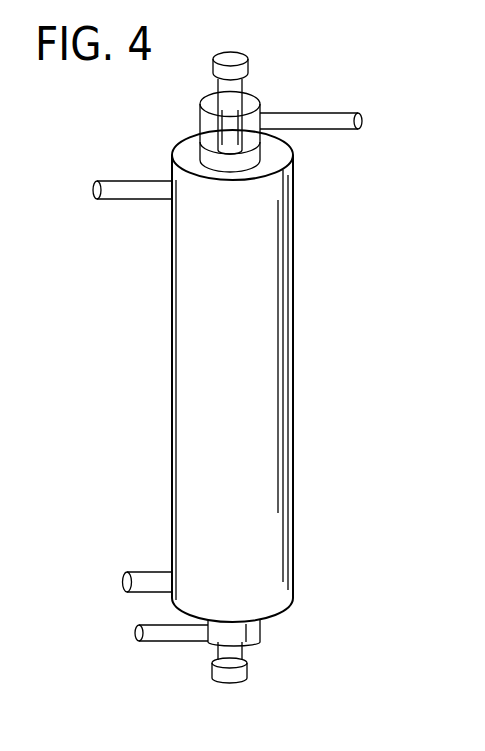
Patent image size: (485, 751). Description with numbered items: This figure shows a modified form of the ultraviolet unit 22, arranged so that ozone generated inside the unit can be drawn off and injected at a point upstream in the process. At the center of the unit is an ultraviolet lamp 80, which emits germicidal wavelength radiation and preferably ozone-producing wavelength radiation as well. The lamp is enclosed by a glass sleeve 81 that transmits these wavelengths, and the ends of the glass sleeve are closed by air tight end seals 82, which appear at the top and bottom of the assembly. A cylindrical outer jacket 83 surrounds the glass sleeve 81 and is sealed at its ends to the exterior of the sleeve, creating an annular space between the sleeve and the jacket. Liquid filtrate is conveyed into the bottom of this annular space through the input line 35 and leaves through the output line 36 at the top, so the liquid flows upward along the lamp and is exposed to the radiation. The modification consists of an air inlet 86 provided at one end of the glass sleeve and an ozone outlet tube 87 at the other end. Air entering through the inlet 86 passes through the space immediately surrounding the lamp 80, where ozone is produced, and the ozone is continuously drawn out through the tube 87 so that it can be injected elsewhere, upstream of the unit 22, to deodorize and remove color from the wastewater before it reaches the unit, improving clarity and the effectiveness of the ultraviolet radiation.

The ultraviolet unit 22 is at (160, 271).
The input line 35 is at (143, 578).
The output line 36 is at (108, 182).
The ultraviolet lamp 80 is at (222, 93).
The glass sleeve 81 is at (200, 120).
The air tight end seals 82 is at (262, 100).
The cylindrical outer jacket 83 is at (180, 323).
The air inlet 86 is at (160, 638).
The ozone outlet tube 87 is at (345, 128).